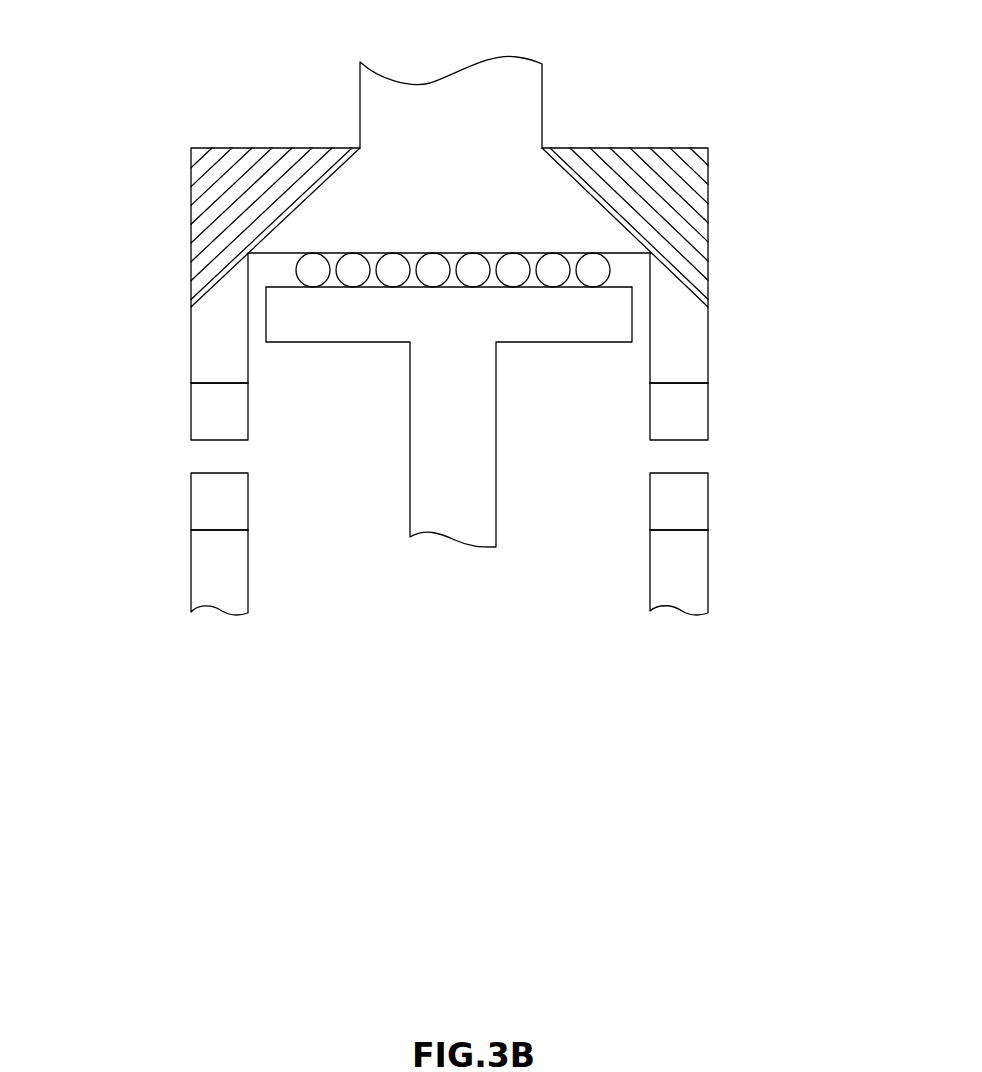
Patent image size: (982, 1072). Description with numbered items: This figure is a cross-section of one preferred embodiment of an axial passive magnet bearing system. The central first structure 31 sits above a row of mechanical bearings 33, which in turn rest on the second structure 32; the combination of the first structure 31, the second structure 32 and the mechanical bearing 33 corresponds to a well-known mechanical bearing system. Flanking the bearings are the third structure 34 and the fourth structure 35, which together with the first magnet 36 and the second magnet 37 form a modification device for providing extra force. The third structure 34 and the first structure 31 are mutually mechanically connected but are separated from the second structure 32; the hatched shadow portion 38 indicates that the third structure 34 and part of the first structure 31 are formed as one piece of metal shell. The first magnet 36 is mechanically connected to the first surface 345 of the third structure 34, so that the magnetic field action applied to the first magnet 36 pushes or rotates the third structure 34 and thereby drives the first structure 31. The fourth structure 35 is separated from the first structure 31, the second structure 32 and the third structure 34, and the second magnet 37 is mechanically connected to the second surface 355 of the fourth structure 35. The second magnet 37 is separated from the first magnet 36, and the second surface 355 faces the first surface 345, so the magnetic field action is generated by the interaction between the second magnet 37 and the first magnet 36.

The first structure 31 is at (478, 145).
The second structure 32 is at (472, 487).
The mechanical bearing 33 is at (450, 454).
The third structure 34 is at (212, 303).
The first surface 345 is at (210, 382).
The fourth structure 35 is at (213, 587).
The second surface 355 is at (203, 530).
The first magnet 36 is at (202, 408).
The second magnet 37 is at (213, 498).
The shadow portion 38 is at (298, 215).